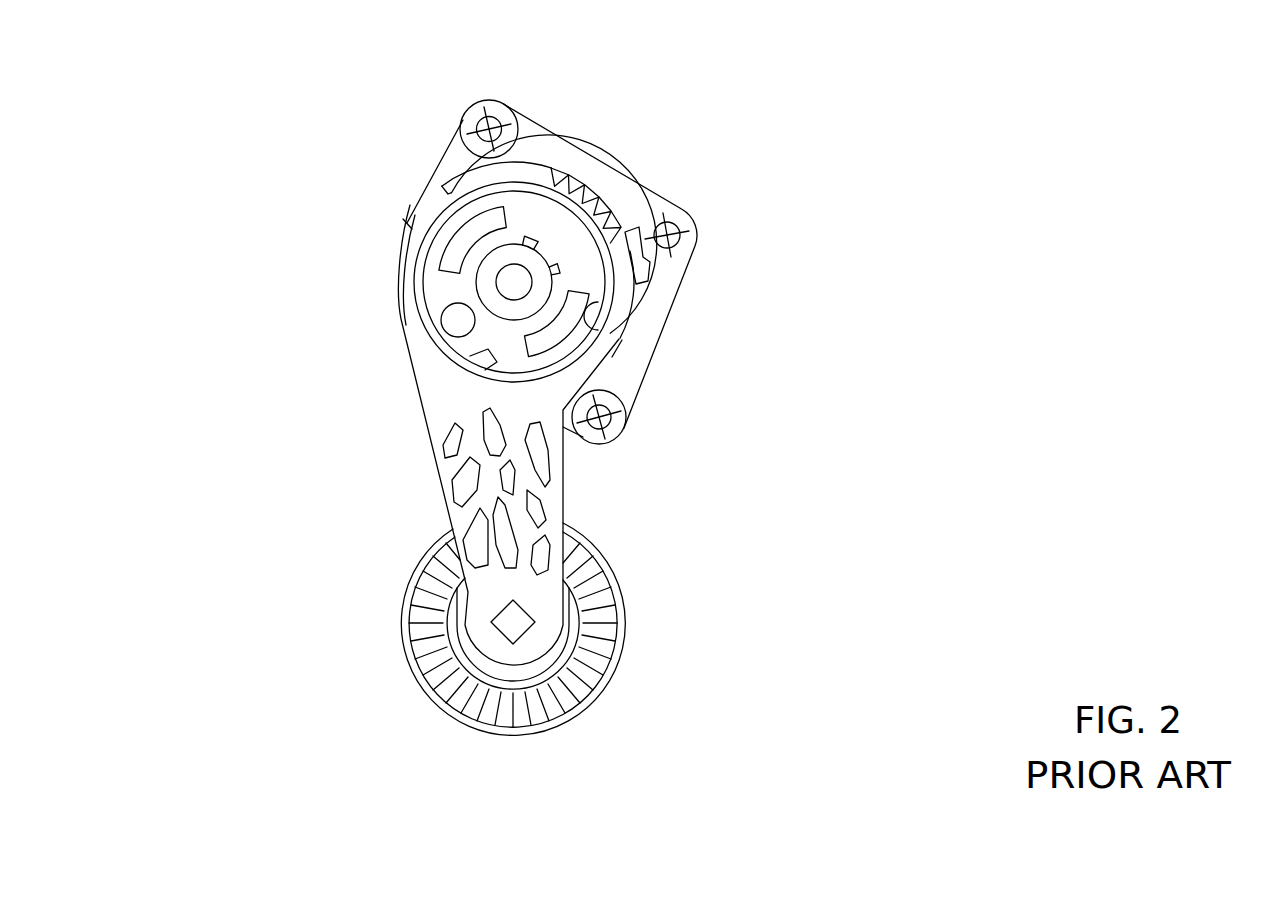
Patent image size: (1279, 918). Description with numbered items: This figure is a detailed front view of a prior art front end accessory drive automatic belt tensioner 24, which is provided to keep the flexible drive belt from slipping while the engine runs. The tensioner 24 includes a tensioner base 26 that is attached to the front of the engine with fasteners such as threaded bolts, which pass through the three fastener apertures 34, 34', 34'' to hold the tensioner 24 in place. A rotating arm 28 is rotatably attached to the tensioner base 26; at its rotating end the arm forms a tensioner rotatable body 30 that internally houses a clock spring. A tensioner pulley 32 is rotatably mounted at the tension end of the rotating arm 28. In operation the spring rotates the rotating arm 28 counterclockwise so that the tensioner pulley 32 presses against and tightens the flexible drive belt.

The tensioner 24 is at (683, 56).
The tensioner base 26 is at (622, 186).
The rotating arm 28 is at (552, 502).
The tensioner rotatable body 30 is at (411, 232).
The tensioner pulley 32 is at (603, 657).
The fastener aperture 34 is at (512, 90).
The fastener aperture 34' is at (724, 228).
The fastener aperture 34'' is at (665, 431).